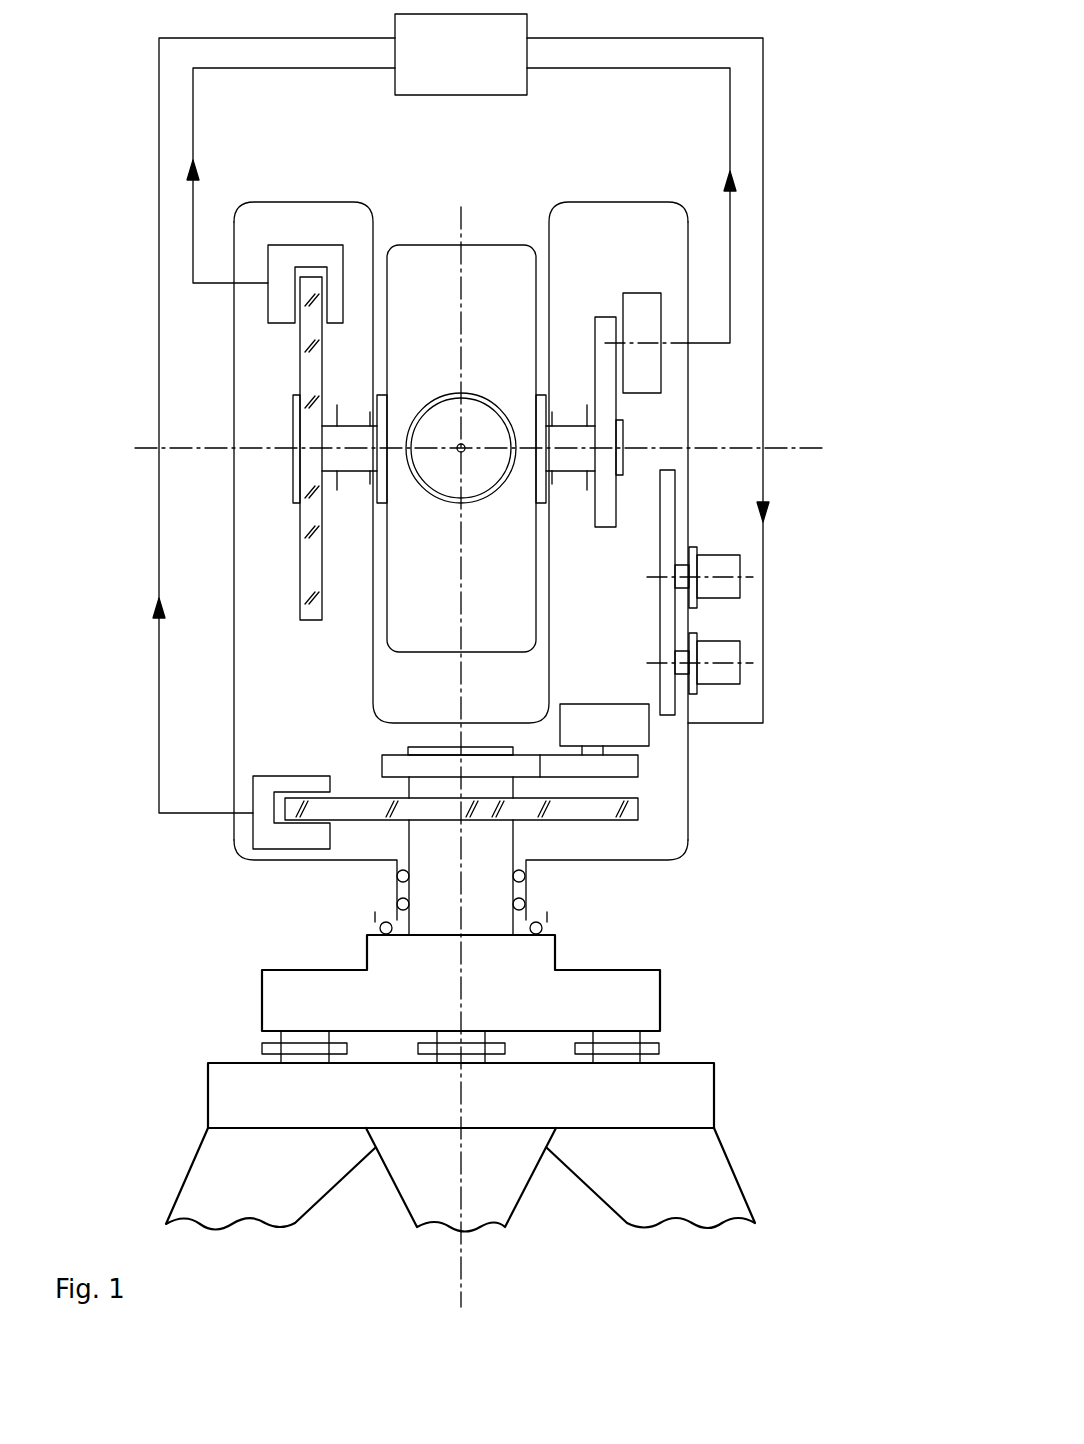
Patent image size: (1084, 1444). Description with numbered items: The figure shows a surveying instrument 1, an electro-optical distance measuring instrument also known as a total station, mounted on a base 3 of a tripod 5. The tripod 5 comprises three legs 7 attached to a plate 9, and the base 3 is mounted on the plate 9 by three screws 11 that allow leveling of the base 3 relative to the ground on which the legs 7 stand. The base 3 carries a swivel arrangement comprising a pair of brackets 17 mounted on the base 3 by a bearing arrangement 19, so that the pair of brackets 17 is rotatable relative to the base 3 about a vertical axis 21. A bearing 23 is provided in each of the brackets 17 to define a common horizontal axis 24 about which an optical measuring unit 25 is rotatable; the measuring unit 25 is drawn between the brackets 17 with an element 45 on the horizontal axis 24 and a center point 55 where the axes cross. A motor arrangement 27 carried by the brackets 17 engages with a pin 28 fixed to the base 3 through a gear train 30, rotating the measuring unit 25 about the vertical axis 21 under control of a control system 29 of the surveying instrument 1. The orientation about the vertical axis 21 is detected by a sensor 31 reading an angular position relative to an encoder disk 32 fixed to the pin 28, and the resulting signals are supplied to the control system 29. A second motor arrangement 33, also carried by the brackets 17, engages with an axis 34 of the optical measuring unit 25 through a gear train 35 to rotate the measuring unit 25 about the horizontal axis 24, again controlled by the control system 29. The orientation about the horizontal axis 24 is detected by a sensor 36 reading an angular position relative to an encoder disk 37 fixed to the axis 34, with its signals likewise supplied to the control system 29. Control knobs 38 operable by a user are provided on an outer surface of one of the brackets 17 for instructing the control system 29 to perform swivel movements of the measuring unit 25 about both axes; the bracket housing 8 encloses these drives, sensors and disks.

The surveying instrument 1 is at (516, 672).
The base 3 is at (660, 982).
The tripod 5 is at (502, 1129).
The legs 7 is at (327, 1197).
The housing 8 is at (462, 561).
The plate 9 is at (715, 1092).
The screws 11 is at (262, 1046).
The brackets 17 is at (234, 512).
The bearing arrangement 19 is at (378, 928).
The vertical axis 21 is at (462, 1282).
The bearing 23 is at (347, 420).
The horizontal axis 24 is at (801, 446).
The optical measuring unit 25 is at (494, 243).
The motor arrangement 27 is at (588, 702).
The pin 28 is at (428, 890).
The control system 29 is at (477, 72).
The gear train 30 is at (382, 766).
The sensor 31 is at (275, 849).
The encoder disk 32 is at (640, 808).
The motor arrangement 33 is at (640, 291).
The axis 34 is at (354, 462).
The gear train 35 is at (617, 405).
The sensor 36 is at (275, 323).
The encoder disk 37 is at (300, 562).
The control knobs 38 is at (740, 645).
The telescope lens 45 is at (478, 400).
The center point 55 is at (459, 455).